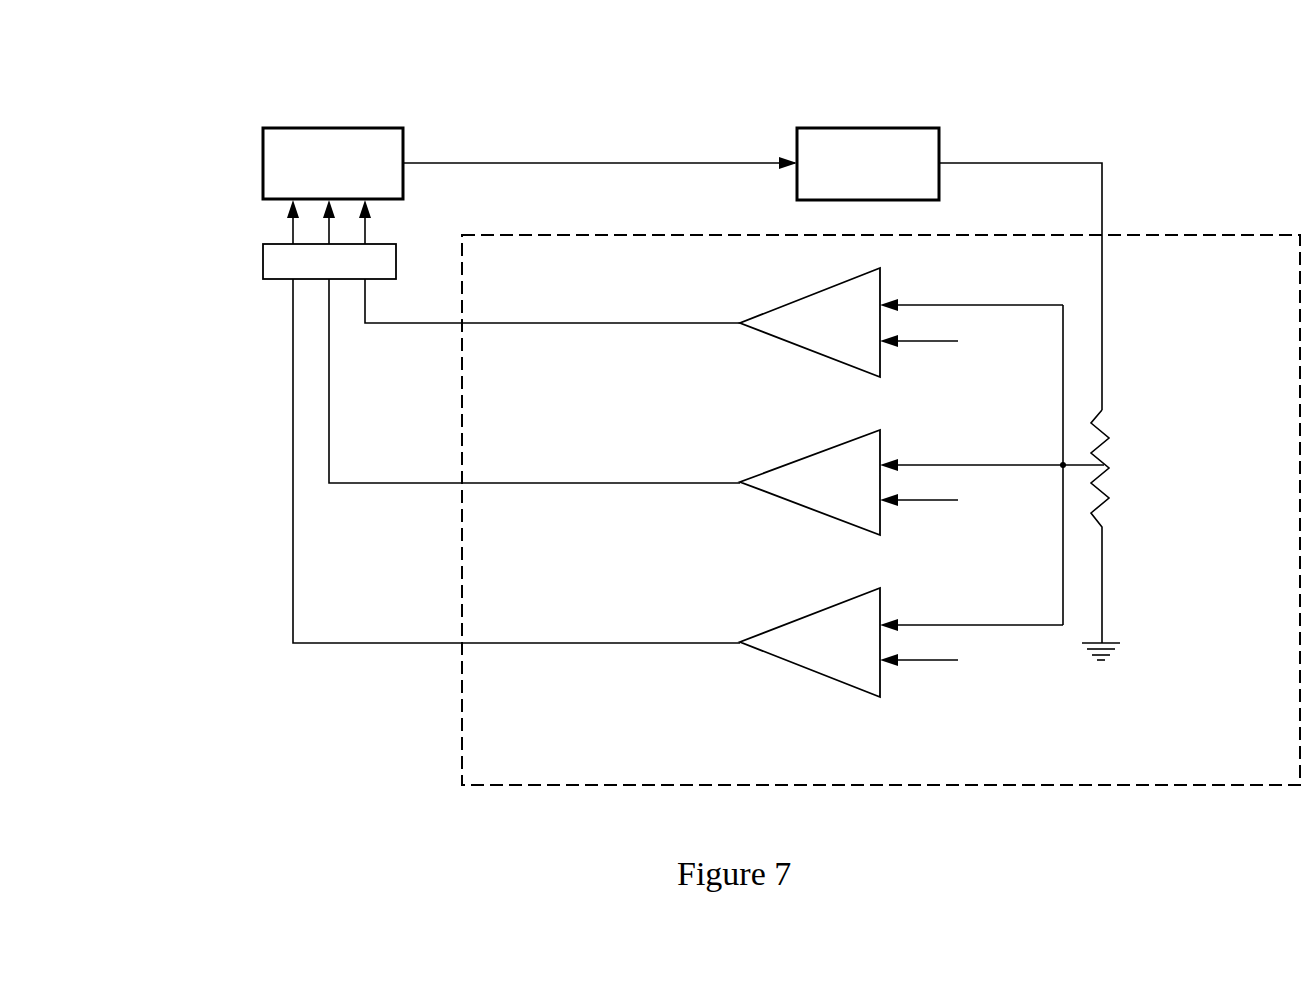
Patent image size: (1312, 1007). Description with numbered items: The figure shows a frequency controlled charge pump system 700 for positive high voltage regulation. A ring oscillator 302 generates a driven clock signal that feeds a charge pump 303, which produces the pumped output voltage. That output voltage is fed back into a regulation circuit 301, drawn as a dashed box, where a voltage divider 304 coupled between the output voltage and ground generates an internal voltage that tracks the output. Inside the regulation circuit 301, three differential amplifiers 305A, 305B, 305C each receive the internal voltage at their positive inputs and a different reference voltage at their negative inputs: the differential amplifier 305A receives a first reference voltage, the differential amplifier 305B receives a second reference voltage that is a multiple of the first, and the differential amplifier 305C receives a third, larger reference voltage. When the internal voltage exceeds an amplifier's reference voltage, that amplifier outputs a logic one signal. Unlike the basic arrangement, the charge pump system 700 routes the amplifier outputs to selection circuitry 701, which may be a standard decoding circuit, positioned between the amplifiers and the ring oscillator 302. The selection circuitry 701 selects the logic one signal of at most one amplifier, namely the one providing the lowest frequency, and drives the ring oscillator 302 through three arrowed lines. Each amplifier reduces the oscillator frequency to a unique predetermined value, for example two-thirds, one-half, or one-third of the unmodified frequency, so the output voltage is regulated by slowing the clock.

The charge pump system 700 is at (1113, 108).
The ring oscillator 302 is at (307, 128).
The charge pump 303 is at (850, 128).
The selection circuitry 701 is at (263, 258).
The regulation circuit 301 is at (1230, 761).
The differential amplifier 305A is at (780, 339).
The differential amplifier 305B is at (780, 499).
The differential amplifier 305C is at (780, 659).
The voltage divider 304 is at (1127, 427).